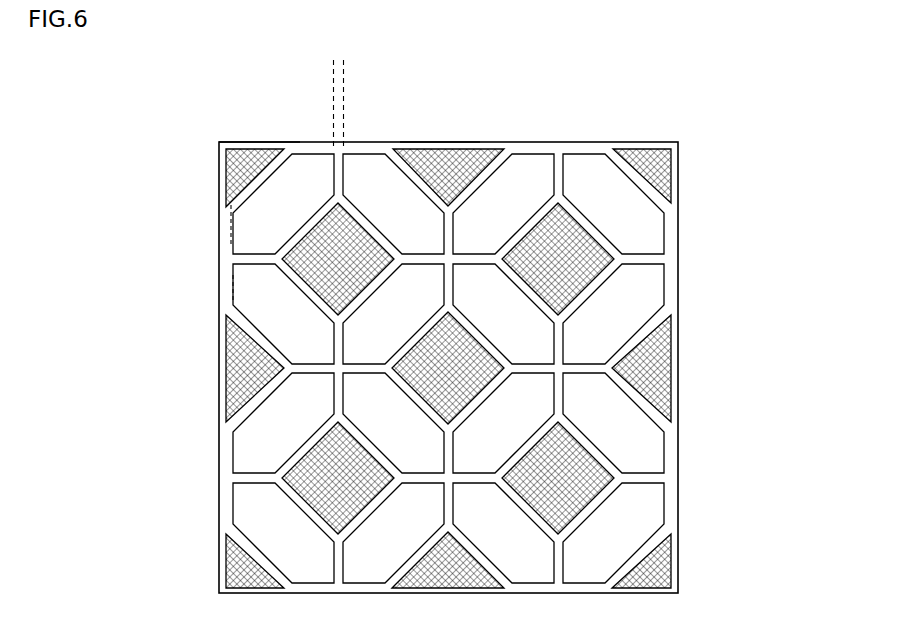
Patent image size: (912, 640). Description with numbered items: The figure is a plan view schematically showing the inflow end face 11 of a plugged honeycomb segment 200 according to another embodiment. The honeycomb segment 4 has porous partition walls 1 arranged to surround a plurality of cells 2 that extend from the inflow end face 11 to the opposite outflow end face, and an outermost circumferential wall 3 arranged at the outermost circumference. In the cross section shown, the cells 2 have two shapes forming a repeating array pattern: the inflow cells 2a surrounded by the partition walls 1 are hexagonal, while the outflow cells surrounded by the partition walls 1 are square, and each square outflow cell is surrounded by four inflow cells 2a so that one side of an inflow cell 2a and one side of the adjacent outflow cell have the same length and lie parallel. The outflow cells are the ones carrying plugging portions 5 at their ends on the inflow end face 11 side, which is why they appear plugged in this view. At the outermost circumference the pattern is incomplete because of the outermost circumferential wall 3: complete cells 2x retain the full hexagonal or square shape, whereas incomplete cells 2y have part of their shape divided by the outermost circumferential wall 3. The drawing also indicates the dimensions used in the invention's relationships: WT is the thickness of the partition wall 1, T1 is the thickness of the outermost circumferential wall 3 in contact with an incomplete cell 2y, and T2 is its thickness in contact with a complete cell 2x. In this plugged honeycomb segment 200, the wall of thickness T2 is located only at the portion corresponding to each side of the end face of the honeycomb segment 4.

The plugged honeycomb segment 200 is at (820, 64).
The partition wall 1 is at (563, 178).
The cell 2 is at (503, 324).
The inflow cell 2a is at (497, 315).
The complete cell 2x is at (500, 322).
The incomplete cell 2y is at (526, 353).
The outermost circumferential wall 3 is at (678, 468).
The honeycomb segment 4 is at (440, 138).
The plugging portion 5 is at (437, 378).
The inflow end face 11 is at (272, 140).
The thickness of the partition wall WT is at (352, 86).
The thickness of the outermost circumferential wall in contact with the incomplete c T1 is at (239, 236).
The thickness of the outermost circumferential wall in contact with the complete cel T2 is at (241, 294).